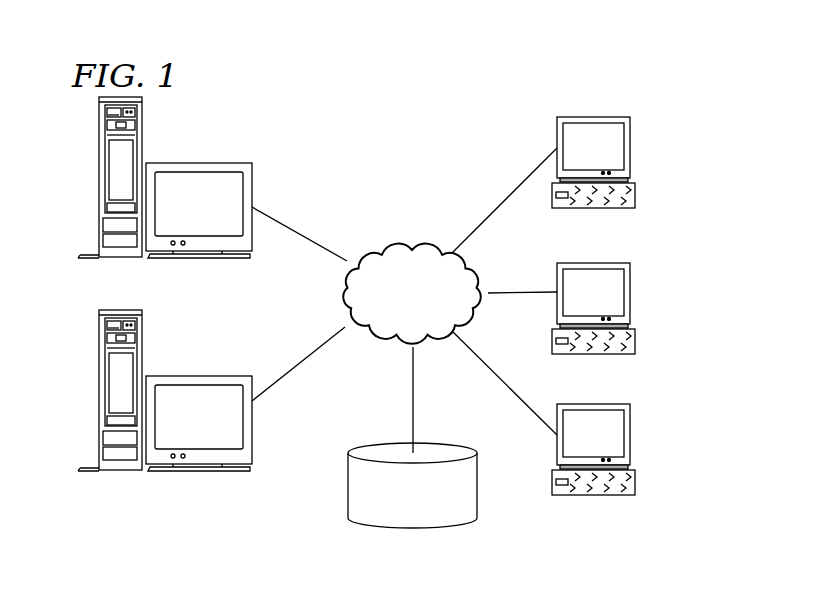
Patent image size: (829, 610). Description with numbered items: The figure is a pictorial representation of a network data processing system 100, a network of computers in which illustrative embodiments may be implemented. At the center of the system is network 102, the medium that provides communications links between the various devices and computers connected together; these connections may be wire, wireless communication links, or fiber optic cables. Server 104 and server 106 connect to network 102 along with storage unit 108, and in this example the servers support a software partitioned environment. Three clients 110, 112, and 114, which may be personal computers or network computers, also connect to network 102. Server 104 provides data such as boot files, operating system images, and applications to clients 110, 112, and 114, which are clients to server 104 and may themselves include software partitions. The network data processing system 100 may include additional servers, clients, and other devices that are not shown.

The network data processing system 100 is at (466, 124).
The network 102 is at (383, 242).
The server 104 is at (98, 178).
The server 106 is at (98, 391).
The storage unit 108 is at (395, 528).
The client 110 is at (630, 147).
The client 112 is at (630, 292).
The client 114 is at (630, 435).